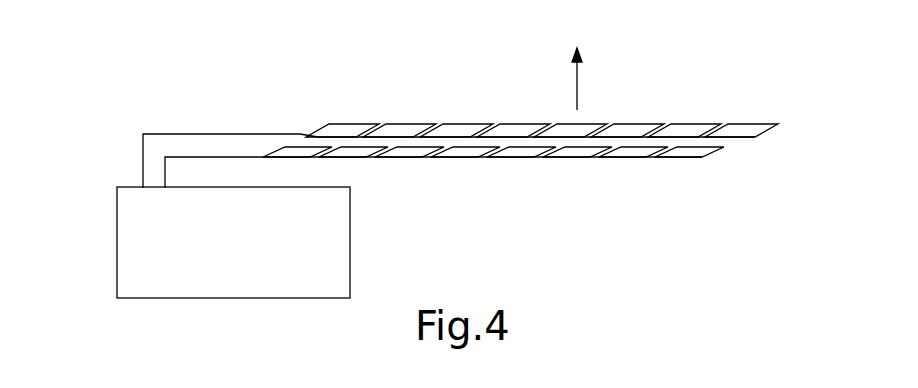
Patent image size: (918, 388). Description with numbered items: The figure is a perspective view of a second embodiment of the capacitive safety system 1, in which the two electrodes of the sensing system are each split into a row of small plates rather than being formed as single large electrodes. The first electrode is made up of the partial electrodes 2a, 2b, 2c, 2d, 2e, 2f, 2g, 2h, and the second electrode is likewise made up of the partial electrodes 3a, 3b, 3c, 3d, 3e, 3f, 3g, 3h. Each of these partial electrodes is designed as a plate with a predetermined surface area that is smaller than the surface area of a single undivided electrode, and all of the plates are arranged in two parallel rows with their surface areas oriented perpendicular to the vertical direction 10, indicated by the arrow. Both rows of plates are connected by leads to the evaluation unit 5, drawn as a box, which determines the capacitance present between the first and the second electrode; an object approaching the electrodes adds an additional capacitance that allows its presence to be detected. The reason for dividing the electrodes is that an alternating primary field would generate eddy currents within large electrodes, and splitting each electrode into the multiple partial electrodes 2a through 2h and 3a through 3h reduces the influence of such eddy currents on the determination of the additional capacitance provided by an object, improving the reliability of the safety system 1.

The safety system 1 is at (93, 277).
The evaluation unit 5 is at (350, 282).
The vertical direction 10 is at (577, 110).
The partial electrode 2a is at (368, 123).
The partial electrode 2b is at (343, 158).
The partial electrode 2c is at (473, 123).
The partial electrode 2d is at (462, 158).
The partial electrode 2e is at (595, 123).
The partial electrode 2f is at (568, 158).
The partial electrode 2g is at (698, 123).
The partial electrode 2h is at (680, 158).
The partial electrode 3a is at (280, 150).
The partial electrode 3b is at (416, 123).
The partial electrode 3c is at (400, 158).
The partial electrode 3d is at (527, 123).
The partial electrode 3e is at (508, 158).
The partial electrode 3f is at (643, 123).
The partial electrode 3g is at (617, 158).
The partial electrode 3h is at (758, 123).